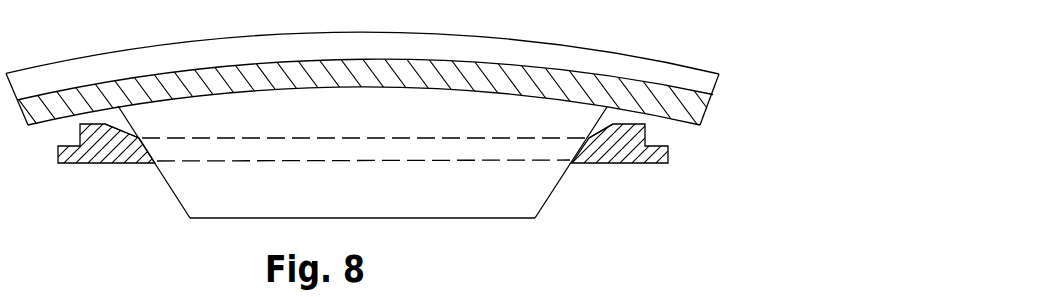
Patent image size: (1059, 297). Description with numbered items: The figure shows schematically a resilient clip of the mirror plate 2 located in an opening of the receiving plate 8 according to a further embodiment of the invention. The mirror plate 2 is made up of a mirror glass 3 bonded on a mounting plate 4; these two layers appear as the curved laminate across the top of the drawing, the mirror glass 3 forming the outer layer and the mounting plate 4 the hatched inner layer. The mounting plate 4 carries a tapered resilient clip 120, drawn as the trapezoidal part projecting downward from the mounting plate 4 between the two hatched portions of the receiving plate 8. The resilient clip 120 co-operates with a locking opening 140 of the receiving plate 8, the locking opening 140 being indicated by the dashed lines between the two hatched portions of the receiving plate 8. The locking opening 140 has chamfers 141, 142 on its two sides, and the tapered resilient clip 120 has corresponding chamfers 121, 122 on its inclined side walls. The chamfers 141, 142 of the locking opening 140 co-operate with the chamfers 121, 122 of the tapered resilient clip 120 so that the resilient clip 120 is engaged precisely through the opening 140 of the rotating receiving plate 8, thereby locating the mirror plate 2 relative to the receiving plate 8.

The mirror plate 2 is at (412, 86).
The mirror glass 3 is at (717, 89).
The mounting plate 4 is at (707, 123).
The receiving plate 8 is at (393, 99).
The tapered resilient clip 120 is at (380, 188).
The chamfer of the resilient clip 121 is at (547, 210).
The chamfer of the resilient clip 122 is at (176, 195).
The locking opening 140 is at (477, 145).
The chamfer of the locking opening 141 is at (612, 125).
The chamfer of the locking opening 142 is at (118, 127).